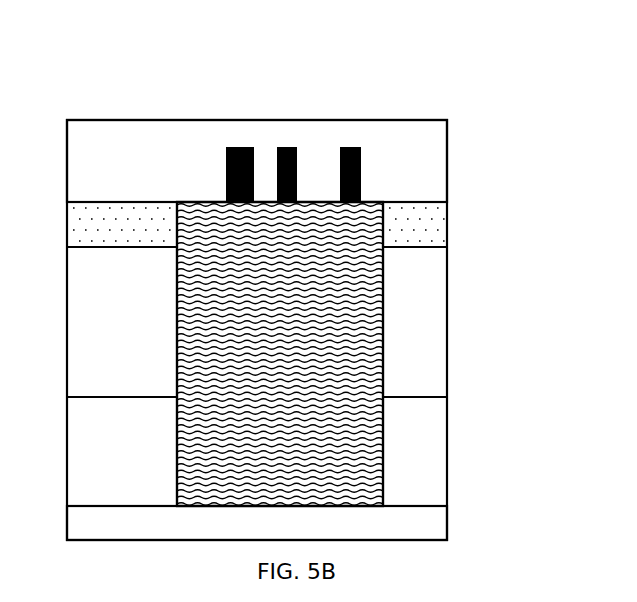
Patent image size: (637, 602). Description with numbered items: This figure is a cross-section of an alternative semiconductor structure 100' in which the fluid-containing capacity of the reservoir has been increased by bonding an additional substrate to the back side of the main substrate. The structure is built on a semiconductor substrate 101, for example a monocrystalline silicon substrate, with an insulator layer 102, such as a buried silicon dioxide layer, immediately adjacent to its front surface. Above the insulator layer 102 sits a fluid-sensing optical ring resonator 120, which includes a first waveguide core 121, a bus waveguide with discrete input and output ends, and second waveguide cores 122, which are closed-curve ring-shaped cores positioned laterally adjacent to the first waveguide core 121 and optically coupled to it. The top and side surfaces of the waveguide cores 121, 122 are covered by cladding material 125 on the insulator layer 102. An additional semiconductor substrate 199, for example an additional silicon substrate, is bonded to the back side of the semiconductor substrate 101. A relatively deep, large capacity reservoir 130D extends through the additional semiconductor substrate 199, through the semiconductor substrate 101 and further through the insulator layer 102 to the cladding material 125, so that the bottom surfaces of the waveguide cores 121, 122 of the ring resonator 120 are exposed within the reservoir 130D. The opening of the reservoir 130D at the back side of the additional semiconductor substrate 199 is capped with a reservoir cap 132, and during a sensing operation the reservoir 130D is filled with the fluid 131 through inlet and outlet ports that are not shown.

The semiconductor structure 100' is at (258, 276).
The fluid-sensing optical ring resonator 120 is at (353, 68).
The first waveguide core 121 is at (242, 147).
The second waveguide cores 122 is at (363, 137).
The cladding material 125 is at (447, 152).
The insulator layer 102 is at (447, 225).
The reservoir 130D is at (383, 268).
The fluid 131 is at (383, 306).
The semiconductor substrate 101 is at (447, 356).
The additional semiconductor substrate 199 is at (447, 440).
The reservoir cap 132 is at (447, 532).